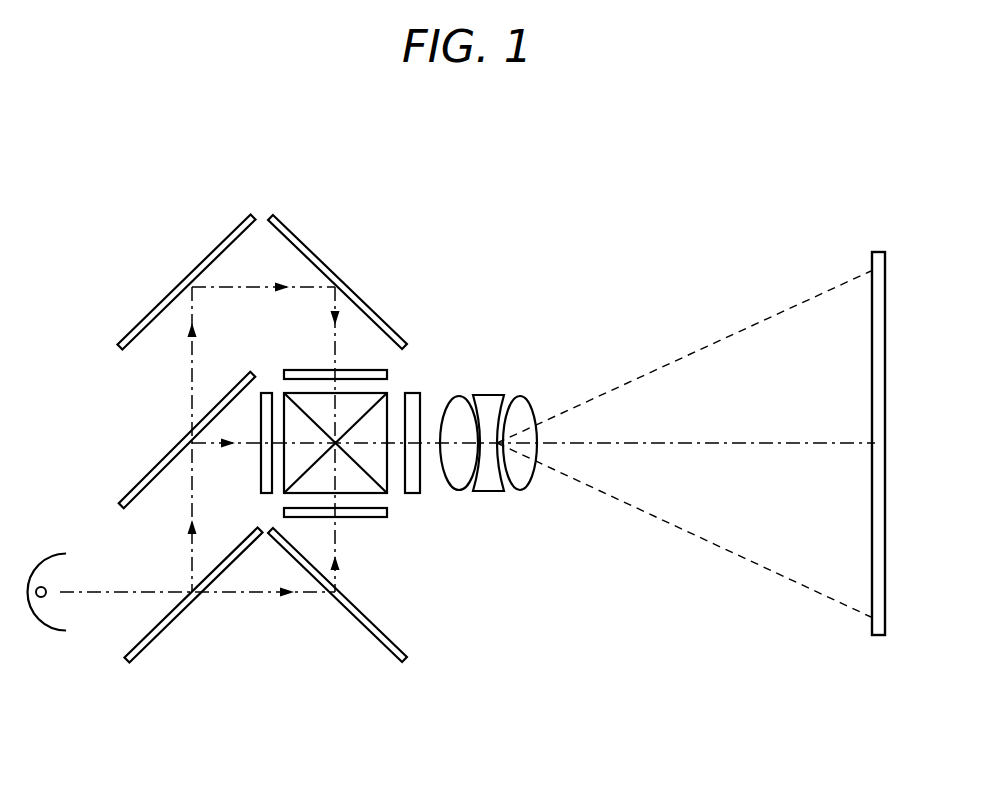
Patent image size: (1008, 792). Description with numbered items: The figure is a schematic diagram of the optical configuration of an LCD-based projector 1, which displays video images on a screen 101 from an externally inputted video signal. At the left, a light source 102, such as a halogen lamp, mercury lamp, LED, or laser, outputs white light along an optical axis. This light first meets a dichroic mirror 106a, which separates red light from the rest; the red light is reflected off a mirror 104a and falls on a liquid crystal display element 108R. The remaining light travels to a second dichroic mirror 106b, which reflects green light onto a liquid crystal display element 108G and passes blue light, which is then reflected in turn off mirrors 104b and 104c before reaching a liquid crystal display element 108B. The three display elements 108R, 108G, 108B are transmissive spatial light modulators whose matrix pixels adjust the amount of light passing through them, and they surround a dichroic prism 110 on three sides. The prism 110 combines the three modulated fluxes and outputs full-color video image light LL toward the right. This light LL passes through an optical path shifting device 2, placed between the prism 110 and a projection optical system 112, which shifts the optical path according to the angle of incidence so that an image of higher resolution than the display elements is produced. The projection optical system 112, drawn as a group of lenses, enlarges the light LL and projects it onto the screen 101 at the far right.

The projector 1 is at (737, 188).
The screen 101 is at (878, 637).
The light source 102 is at (45, 625).
The mirror 104a is at (306, 631).
The mirror 104b is at (204, 260).
The mirror 104c is at (316, 258).
The dichroic mirror 106a is at (158, 636).
The dichroic mirror 106b is at (142, 480).
The liquid crystal display element 108B is at (388, 372).
The liquid crystal display element 108G is at (261, 462).
The liquid crystal display element 108R is at (313, 517).
The dichroic prism 110 is at (388, 396).
The projection optical system 112 is at (537, 497).
The optical path shifting device 2 is at (422, 478).
The video image light LL is at (392, 457).